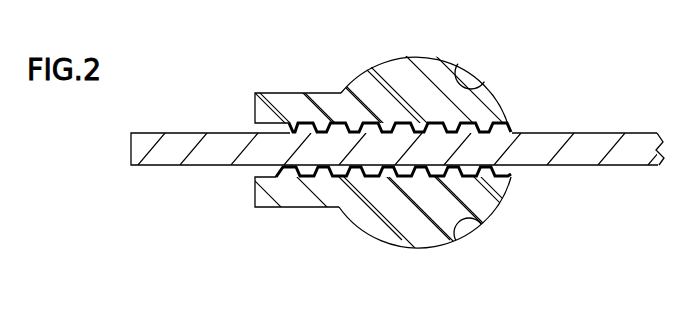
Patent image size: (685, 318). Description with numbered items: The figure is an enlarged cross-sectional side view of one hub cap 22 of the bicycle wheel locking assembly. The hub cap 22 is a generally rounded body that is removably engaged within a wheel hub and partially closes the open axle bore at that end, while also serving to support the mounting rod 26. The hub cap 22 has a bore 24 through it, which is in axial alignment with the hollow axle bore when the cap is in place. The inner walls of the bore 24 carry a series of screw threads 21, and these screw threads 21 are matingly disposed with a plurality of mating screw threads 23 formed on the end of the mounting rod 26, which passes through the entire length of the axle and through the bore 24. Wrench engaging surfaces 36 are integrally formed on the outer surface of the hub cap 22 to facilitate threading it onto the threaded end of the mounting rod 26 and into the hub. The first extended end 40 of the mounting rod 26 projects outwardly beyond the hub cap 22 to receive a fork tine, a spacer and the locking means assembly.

The first extended end 40 is at (162, 134).
The mounting rod 26 is at (605, 158).
The hub cap 22 is at (495, 100).
The wrench engaging surfaces 36 is at (278, 95).
The mating screw threads 23 is at (334, 178).
The screw threads 21 is at (447, 122).
The bore 24 is at (511, 130).